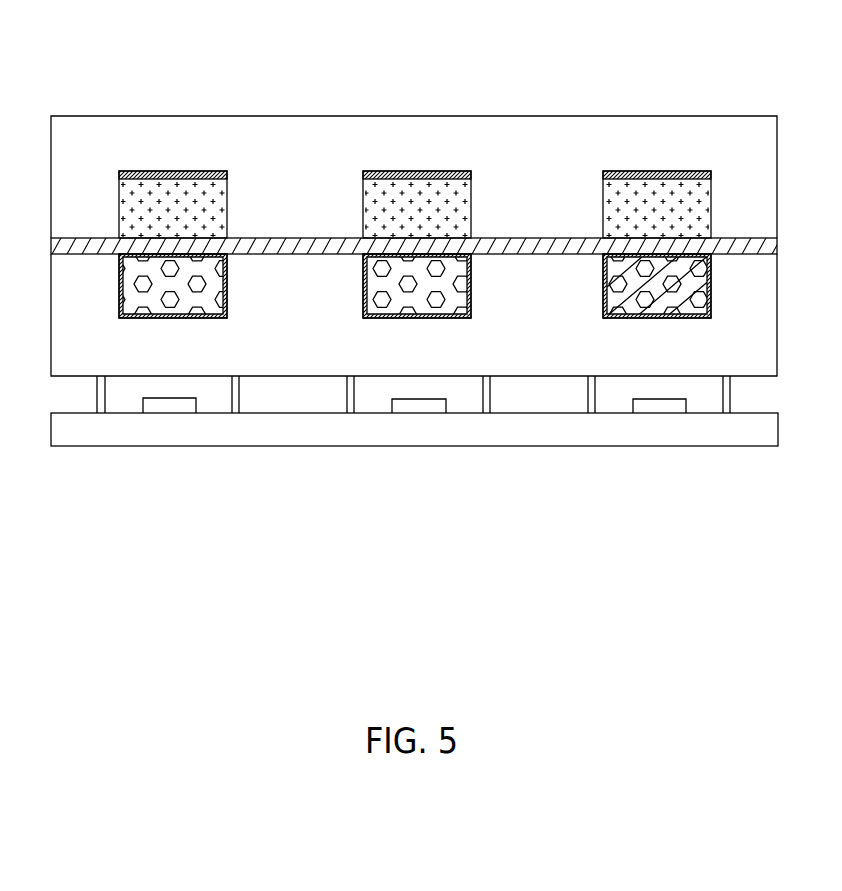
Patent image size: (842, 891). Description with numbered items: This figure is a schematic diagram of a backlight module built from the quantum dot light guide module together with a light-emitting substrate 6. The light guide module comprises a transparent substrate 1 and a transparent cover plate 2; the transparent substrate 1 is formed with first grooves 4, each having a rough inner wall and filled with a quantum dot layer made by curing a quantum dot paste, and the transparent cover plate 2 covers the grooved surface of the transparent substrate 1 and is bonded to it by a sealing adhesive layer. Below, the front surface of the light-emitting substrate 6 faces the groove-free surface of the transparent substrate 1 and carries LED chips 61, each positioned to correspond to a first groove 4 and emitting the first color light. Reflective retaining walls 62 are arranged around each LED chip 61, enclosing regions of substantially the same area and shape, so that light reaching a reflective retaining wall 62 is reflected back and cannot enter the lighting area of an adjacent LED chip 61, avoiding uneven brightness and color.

The transparent substrate 1 is at (57, 275).
The transparent cover plate 2 is at (319, 157).
The first groove 4 is at (197, 300).
The light-emitting substrate 6 is at (183, 432).
The LED chip 61 is at (160, 408).
The reflective retaining wall 62 is at (235, 400).